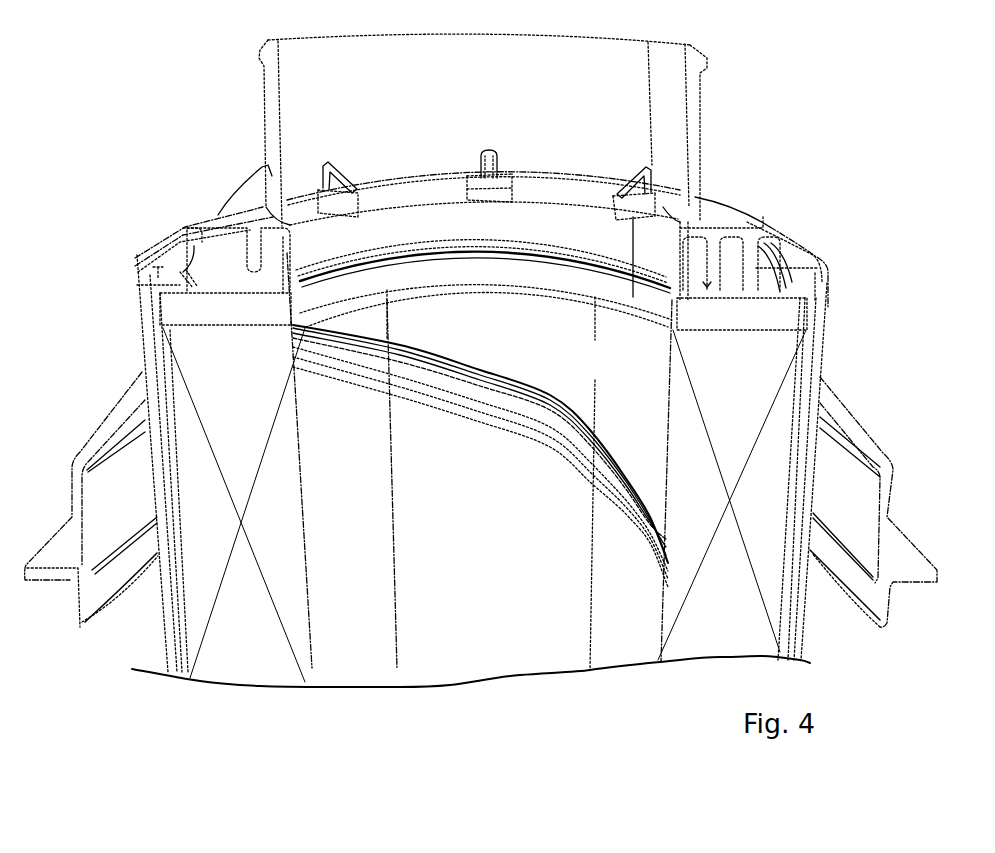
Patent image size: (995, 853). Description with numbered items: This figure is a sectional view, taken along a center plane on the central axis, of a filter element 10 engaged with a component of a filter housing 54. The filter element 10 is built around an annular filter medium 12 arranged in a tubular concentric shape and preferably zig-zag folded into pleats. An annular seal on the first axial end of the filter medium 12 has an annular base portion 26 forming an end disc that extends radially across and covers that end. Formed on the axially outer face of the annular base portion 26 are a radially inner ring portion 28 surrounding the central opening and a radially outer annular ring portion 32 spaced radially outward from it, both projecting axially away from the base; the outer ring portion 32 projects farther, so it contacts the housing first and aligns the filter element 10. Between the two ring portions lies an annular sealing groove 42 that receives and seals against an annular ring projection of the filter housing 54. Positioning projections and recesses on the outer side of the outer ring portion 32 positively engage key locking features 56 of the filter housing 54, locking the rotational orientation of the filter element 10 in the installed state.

The filter element 10 is at (506, 513).
The annular filter medium 12 is at (746, 582).
The annular base portion 26 is at (218, 324).
The radially inner ring portion 28 is at (273, 250).
The radially outer annular ring portion 32 is at (238, 270).
The annular sealing groove 42 is at (707, 287).
The filter housing 54 is at (820, 337).
The key locking features 56 is at (201, 246).